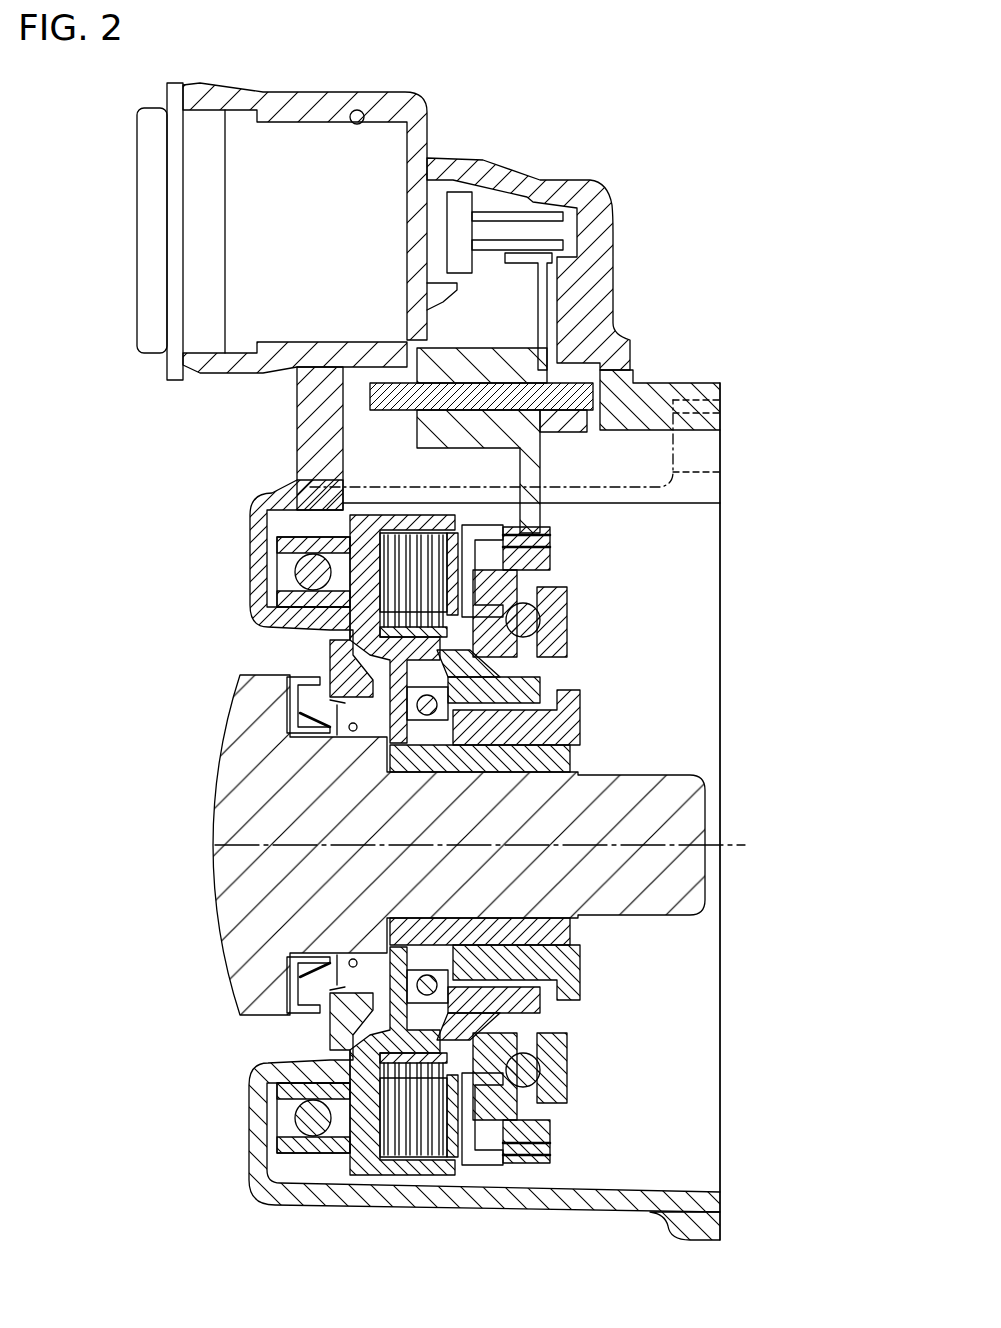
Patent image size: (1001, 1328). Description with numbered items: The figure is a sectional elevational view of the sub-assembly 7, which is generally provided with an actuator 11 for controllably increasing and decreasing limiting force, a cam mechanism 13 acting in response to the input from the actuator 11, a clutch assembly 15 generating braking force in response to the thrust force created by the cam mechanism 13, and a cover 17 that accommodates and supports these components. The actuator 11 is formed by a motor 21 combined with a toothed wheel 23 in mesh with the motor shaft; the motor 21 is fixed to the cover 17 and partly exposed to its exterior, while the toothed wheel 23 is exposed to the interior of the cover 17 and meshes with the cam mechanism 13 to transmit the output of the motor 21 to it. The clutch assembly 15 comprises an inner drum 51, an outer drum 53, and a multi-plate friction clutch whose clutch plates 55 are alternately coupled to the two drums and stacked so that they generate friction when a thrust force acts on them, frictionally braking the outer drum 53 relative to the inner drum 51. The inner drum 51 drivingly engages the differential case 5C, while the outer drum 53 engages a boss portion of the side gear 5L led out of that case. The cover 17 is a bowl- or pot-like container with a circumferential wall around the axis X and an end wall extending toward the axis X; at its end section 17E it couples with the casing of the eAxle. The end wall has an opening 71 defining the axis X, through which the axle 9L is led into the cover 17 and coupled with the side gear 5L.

The sub-assembly 7 is at (683, 172).
The actuator 11 is at (505, 125).
The cam mechanism 13 is at (590, 605).
The clutch assembly 15 is at (350, 485).
The cover 17 is at (250, 562).
The end section 17E is at (722, 392).
The motor 21 is at (137, 183).
The toothed wheel 23 is at (575, 295).
The inner drum 51 is at (545, 688).
The outer drum 53 is at (378, 520).
The clutch plates 55 is at (415, 520).
The differential case 5C is at (585, 705).
The side gear 5L is at (583, 765).
The opening 71 is at (300, 672).
The axle 9L is at (248, 1016).
The axis X is at (742, 840).